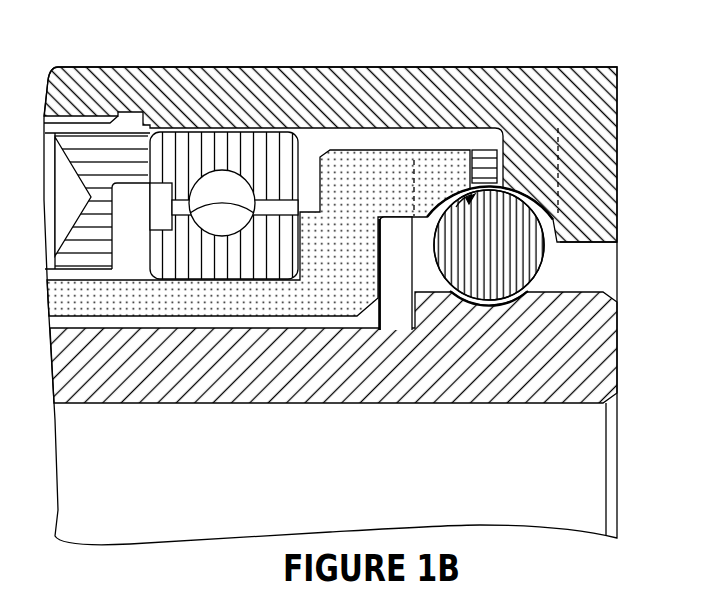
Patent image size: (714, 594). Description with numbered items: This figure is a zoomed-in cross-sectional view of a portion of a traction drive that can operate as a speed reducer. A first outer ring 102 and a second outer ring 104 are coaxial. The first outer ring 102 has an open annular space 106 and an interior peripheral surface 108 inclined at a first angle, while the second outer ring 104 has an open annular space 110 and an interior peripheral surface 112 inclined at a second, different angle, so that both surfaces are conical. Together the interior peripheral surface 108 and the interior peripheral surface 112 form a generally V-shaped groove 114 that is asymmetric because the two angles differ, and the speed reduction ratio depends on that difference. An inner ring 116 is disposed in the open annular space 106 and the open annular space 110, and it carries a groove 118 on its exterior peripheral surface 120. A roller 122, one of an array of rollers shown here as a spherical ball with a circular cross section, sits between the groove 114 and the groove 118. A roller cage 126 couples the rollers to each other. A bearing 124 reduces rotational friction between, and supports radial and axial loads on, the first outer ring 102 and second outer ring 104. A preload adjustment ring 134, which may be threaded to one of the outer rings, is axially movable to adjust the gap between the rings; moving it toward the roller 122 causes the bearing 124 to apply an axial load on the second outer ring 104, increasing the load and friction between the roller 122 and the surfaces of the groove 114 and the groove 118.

The first outer ring 102 is at (597, 97).
The second outer ring 104 is at (347, 180).
The open annular space 106 is at (624, 272).
The interior peripheral surface 108 is at (537, 222).
The open annular space 110 is at (379, 334).
The interior peripheral surface 112 is at (424, 226).
The groove 114 is at (452, 204).
The inner ring 116 is at (608, 347).
The groove 118 is at (492, 287).
The exterior peripheral surface 120 is at (592, 280).
The roller 122 is at (459, 291).
The bearing 124 is at (200, 150).
The roller cage 126 is at (485, 160).
The preload adjustment ring 134 is at (88, 127).